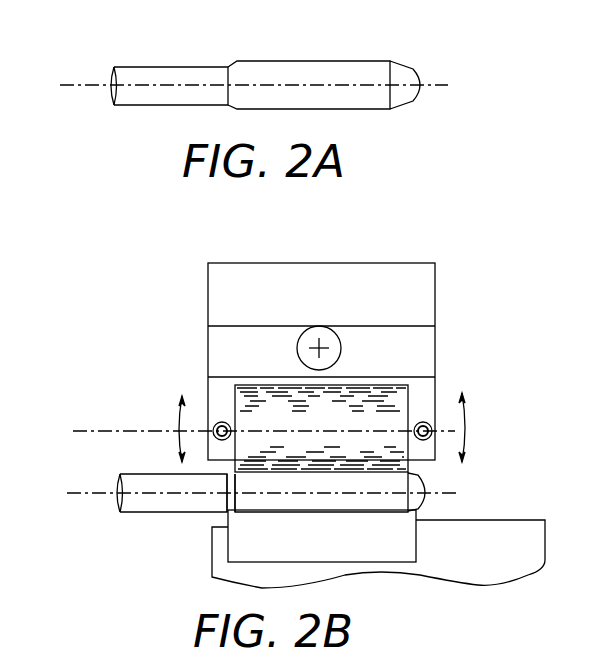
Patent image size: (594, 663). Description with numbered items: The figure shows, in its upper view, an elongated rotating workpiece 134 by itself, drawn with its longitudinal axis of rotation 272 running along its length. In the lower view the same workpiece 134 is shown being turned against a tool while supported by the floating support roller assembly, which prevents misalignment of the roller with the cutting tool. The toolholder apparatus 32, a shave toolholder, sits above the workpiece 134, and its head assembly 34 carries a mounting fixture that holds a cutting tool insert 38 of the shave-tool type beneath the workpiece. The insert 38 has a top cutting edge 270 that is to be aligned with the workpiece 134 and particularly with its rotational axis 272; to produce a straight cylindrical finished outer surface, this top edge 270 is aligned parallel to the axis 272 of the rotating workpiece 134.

In FIG. 2A, the elongated rotating workpiece 134 is at (148, 73).
In FIG. 2A, the longitudinal axis of rotation 272 is at (438, 82).
In FIG. 2B, the longitudinal axis of rotation 272 is at (73, 493).
In FIG. 2B, the toolholder apparatus 32 is at (378, 262).
In FIG. 2B, the top cutting edge 270 is at (390, 510).
In FIG. 2B, the cutting tool insert 38 is at (242, 536).
In FIG. 2B, the head assembly 34 is at (513, 540).